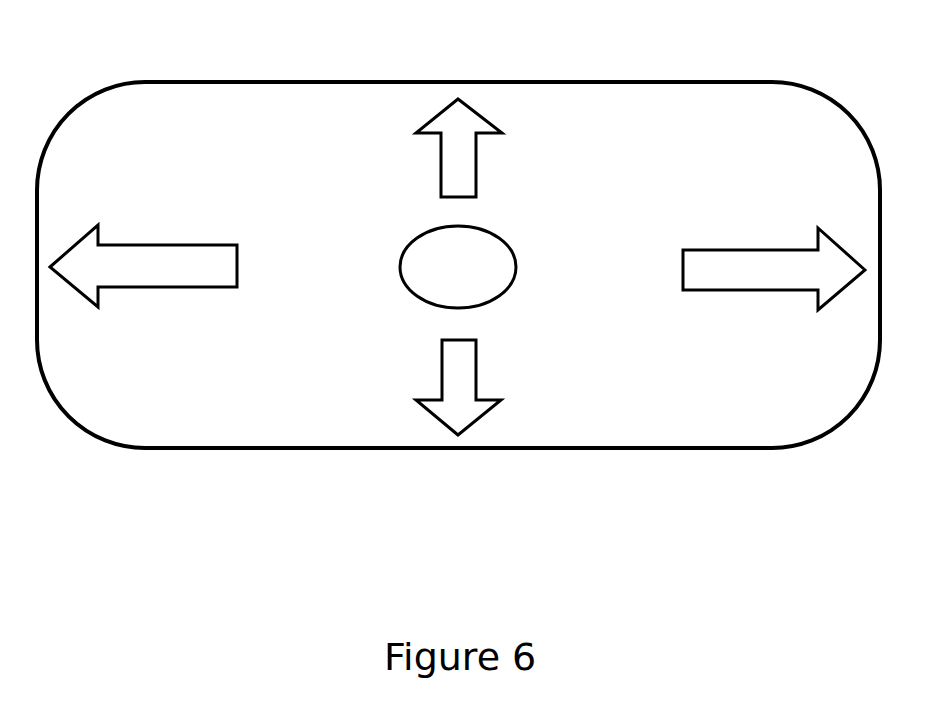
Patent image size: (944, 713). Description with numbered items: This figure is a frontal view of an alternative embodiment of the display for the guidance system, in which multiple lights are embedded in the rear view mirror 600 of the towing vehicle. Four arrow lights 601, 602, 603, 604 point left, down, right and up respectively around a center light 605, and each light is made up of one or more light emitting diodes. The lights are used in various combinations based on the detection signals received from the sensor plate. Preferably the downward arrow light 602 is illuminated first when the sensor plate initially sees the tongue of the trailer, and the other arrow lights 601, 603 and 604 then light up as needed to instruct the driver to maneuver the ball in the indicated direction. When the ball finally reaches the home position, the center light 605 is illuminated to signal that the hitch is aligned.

The rear view mirror 600 is at (252, 81).
The arrow light 601 is at (143, 266).
The arrow light 602 is at (450, 387).
The arrow light 603 is at (774, 269).
The arrow light 604 is at (450, 165).
The center light 605 is at (517, 263).